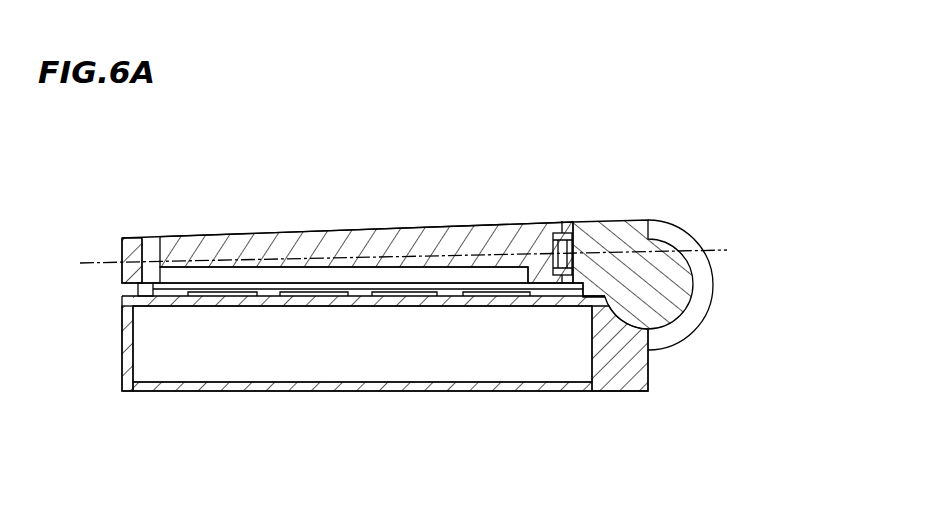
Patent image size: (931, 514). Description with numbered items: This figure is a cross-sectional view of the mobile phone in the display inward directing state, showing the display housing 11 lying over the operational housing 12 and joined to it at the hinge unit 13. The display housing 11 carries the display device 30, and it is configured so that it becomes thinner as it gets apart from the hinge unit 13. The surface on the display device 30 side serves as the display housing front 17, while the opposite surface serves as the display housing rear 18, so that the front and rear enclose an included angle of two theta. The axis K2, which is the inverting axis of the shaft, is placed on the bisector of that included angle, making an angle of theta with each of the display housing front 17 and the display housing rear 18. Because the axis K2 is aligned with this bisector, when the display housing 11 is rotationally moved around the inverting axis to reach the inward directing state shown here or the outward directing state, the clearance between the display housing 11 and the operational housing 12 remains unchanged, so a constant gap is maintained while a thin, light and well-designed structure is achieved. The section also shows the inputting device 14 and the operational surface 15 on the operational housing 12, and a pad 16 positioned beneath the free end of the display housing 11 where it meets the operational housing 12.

The display housing 11 is at (417, 233).
The operational housing 12 is at (620, 383).
The hinge unit 13 is at (623, 232).
The Inputting Device 14 is at (402, 298).
The Operational Surface 15 is at (456, 297).
The Pad 16 is at (138, 290).
The display housing front 17 is at (184, 289).
The display housing rear 18 is at (222, 233).
The display device 30 is at (470, 273).
The axis K2 is at (713, 246).